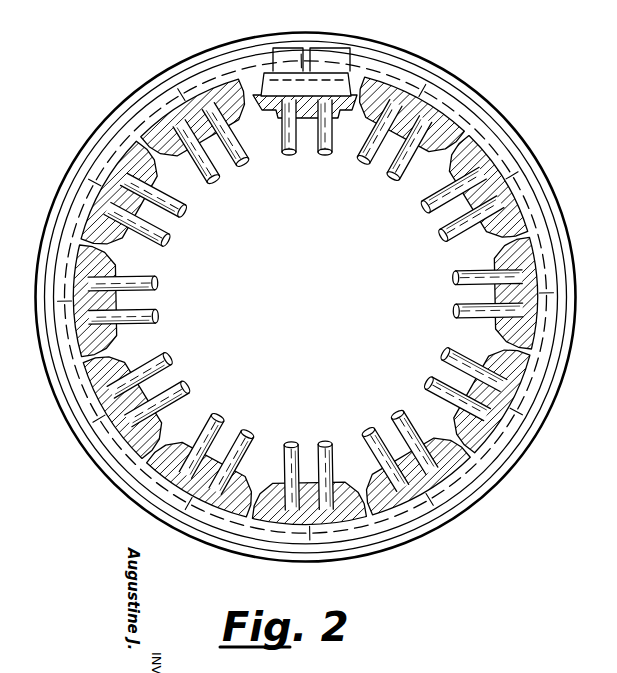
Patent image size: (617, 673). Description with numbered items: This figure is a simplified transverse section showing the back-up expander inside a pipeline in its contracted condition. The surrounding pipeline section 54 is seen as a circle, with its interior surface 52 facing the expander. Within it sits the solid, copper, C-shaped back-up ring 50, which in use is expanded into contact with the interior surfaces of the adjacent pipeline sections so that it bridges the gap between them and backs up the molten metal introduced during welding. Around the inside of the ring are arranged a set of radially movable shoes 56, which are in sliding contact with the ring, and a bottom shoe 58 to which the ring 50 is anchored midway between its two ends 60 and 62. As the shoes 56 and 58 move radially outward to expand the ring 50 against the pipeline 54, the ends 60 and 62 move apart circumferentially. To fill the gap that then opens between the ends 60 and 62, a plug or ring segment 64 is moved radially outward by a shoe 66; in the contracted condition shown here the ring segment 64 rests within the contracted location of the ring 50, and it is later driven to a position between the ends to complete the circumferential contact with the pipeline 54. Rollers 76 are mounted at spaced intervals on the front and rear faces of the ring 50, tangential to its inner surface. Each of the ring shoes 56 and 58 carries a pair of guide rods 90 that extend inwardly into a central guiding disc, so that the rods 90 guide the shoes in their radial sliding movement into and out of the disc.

The back-up ring 50 is at (470, 110).
The interior surface 52 is at (137, 105).
The pipeline section 54 is at (175, 62).
The radially movable shoes 56 is at (146, 170).
The bottom shoe 58 is at (360, 488).
The ring end 60 is at (302, 65).
The ring end 62 is at (322, 63).
The ring segment 64 is at (274, 78).
The shoe 66 is at (273, 117).
The rollers 76 is at (234, 44).
The guide rods 90 is at (205, 165).